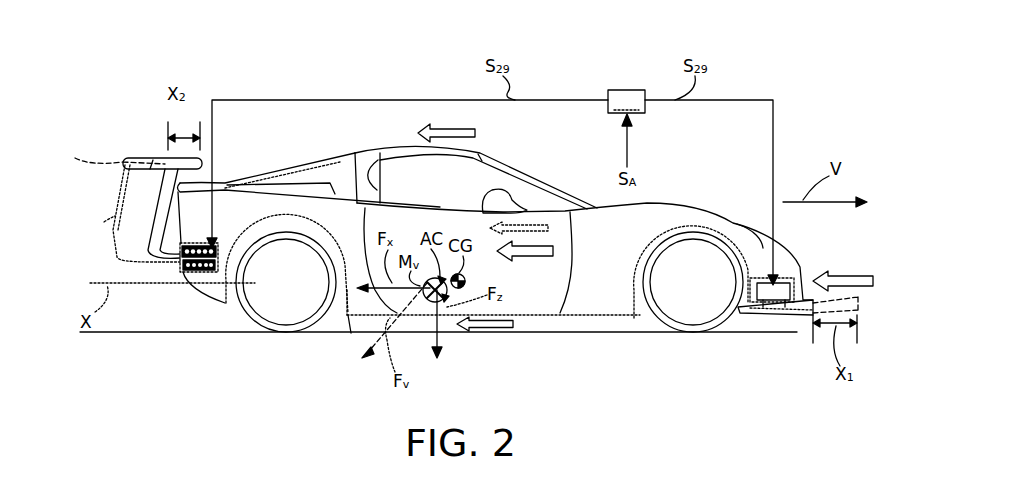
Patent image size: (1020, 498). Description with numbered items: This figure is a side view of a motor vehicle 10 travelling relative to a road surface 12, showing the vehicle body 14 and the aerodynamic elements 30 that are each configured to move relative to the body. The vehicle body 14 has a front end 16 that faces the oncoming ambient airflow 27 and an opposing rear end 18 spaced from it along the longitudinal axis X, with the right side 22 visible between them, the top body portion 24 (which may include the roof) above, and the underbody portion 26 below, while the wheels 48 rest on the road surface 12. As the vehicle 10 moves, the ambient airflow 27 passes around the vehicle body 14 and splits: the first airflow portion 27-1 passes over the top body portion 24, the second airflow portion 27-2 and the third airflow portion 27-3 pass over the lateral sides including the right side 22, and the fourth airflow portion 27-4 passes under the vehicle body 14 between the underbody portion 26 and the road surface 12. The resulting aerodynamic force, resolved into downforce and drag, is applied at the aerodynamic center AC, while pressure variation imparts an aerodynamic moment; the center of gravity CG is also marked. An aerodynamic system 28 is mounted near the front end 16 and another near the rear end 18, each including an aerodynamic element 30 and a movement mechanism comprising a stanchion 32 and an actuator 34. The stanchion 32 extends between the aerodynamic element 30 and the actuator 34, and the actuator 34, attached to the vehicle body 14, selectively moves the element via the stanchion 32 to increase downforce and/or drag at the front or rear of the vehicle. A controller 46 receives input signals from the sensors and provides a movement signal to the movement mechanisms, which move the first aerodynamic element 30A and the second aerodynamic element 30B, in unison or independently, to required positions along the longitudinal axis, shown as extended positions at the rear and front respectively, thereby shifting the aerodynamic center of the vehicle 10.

The motor vehicle 10 is at (175, 60).
The road surface 12 is at (160, 332).
The vehicle body 14 is at (381, 163).
The front end 16 is at (800, 290).
The rear end 18 is at (97, 222).
The right side 22 is at (537, 300).
The top body portion 24 is at (340, 162).
The underbody portion 26 is at (351, 333).
The ambient airflow 27 is at (850, 276).
The first airflow portion 27-1 is at (513, 126).
The second airflow portion 27-2 is at (530, 222).
The third airflow portion 27-3 is at (528, 258).
The fourth airflow portion 27-4 is at (497, 327).
The aerodynamic system 28 is at (123, 136).
The aerodynamic element 30 is at (118, 160).
The first aerodynamic element 30A is at (858, 312).
The second aerodynamic element 30B is at (123, 160).
The stanchion 32 is at (116, 200).
The actuator 34 is at (190, 270).
The controller 46 is at (492, 187).
The wheel 48 is at (282, 328).